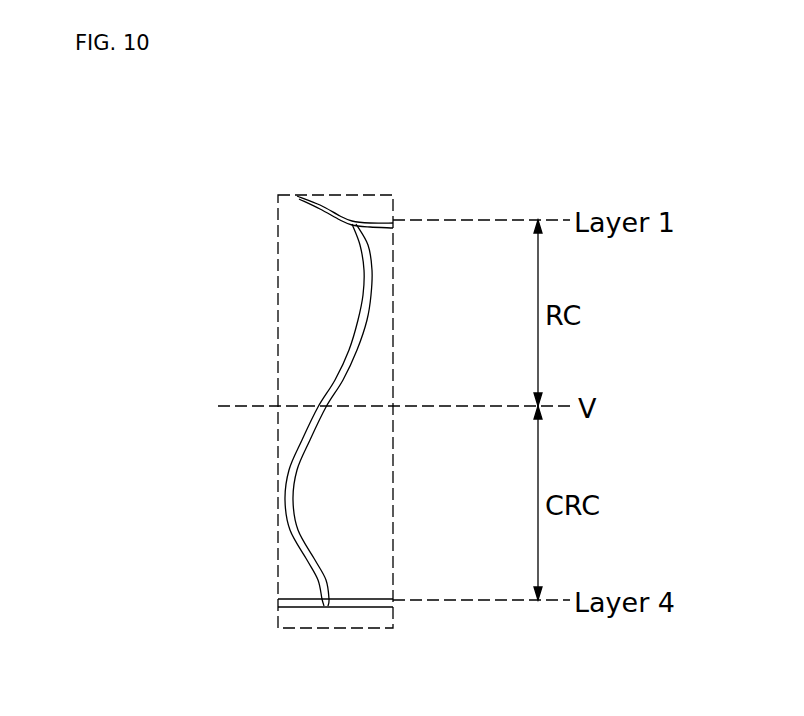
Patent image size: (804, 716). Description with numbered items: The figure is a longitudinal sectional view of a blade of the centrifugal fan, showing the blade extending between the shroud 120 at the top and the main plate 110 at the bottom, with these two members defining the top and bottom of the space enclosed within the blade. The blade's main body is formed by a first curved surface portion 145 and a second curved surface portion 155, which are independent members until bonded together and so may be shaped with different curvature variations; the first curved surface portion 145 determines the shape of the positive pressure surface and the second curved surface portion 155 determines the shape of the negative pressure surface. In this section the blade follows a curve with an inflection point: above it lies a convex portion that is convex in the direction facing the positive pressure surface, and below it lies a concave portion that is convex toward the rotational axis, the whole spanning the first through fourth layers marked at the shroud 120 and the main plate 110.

The shroud 120 is at (330, 207).
The main plate 110 is at (326, 606).
The first curved surface portion 145 is at (374, 306).
The second curved surface portion 155 is at (357, 321).